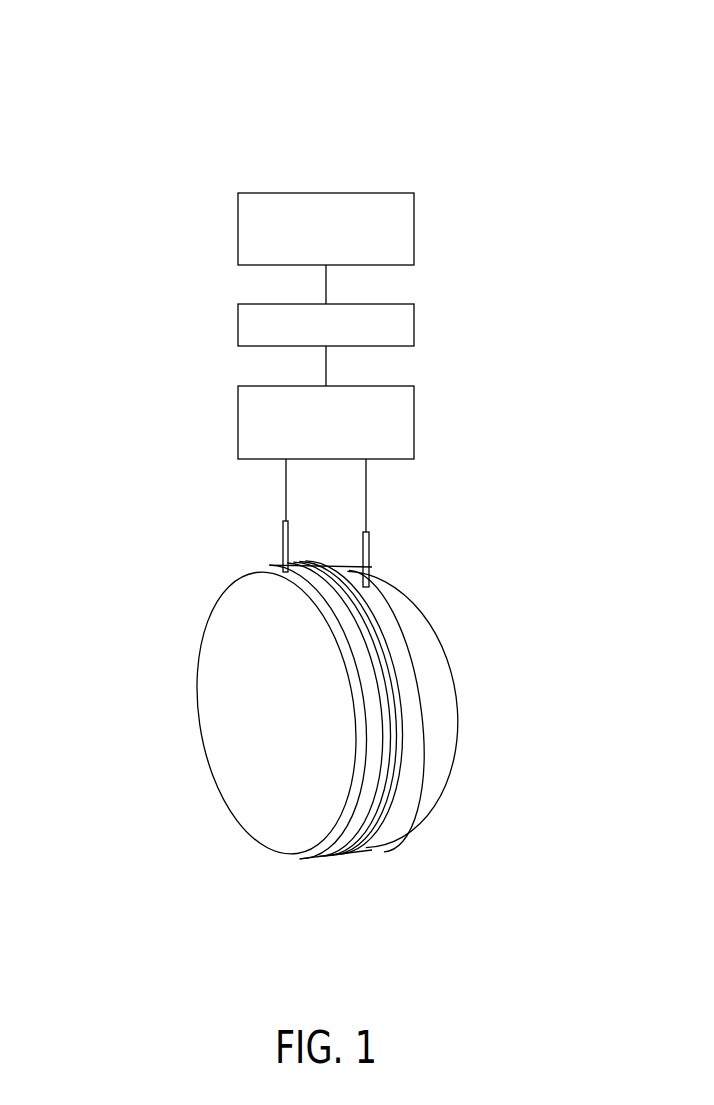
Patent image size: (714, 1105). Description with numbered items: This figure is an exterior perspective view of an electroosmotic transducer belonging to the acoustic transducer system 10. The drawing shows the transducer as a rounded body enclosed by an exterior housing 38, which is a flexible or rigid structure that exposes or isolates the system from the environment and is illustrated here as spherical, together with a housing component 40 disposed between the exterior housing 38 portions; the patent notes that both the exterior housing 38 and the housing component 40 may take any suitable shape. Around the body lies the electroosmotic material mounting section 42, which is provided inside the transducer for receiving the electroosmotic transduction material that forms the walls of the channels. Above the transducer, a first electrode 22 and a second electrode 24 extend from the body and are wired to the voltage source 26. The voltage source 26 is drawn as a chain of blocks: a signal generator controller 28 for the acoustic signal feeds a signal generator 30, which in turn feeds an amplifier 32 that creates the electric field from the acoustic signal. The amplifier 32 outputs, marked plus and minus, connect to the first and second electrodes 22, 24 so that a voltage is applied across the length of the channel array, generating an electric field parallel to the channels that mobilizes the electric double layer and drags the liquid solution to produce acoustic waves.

The acoustic transducer system 10 is at (105, 85).
The first electrode 22 is at (282, 550).
The second electrode 24 is at (372, 557).
The voltage source 26 is at (214, 425).
The signal generator controller 28 is at (414, 231).
The signal generator 30 is at (414, 325).
The amplifier 32 is at (414, 418).
The exterior housing 38 is at (218, 676).
The housing component 40 is at (363, 812).
The electroosmotic material mounting section 42 is at (368, 615).